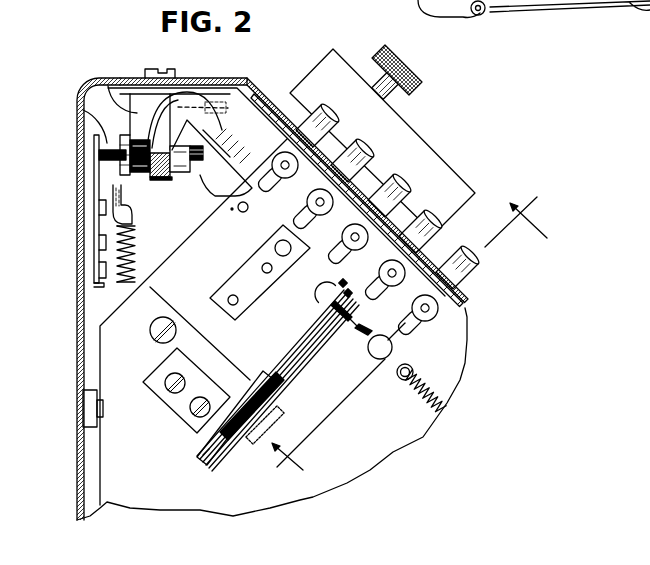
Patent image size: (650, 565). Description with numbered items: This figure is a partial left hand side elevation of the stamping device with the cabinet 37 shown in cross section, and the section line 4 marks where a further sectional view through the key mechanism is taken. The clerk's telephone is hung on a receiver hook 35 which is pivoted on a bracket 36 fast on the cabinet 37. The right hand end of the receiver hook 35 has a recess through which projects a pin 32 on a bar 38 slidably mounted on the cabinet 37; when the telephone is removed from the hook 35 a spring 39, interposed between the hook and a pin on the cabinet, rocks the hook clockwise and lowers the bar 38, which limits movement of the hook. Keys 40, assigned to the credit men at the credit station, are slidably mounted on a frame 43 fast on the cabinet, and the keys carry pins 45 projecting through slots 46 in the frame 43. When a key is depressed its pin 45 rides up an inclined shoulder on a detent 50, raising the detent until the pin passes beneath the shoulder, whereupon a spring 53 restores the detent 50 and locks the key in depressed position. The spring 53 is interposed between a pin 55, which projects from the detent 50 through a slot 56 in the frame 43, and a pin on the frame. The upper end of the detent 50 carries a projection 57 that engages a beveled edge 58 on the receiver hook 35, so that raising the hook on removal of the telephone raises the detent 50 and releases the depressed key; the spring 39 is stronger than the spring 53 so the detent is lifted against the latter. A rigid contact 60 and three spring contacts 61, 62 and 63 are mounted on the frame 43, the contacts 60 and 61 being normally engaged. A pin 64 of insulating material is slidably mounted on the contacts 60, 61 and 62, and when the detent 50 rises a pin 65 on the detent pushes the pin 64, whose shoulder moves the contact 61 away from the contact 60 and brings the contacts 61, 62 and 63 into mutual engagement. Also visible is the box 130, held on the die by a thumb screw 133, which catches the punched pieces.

The section line 4- 4 is at (407, 335).
The pin 32 is at (80, 110).
The receiver hook 35 is at (160, 179).
The bracket 36 is at (108, 86).
The cabinet 37 is at (240, 78).
The bar 38 is at (97, 182).
The spring 39 is at (135, 260).
The keys 40 is at (430, 210).
The frame 43 is at (200, 230).
The pins 45 is at (413, 305).
The slots 46 is at (366, 284).
The detent 50 is at (238, 163).
The spring 53 is at (432, 398).
The pin 55 is at (398, 377).
The slot 56 is at (372, 340).
The projection 57 is at (137, 114).
The beveled edge 58 is at (170, 117).
The rigid contact 60 is at (307, 370).
The spring contact 61 is at (215, 470).
The spring contact 62 is at (210, 462).
The spring contact 63 is at (203, 455).
The pin of insulating material 64 is at (367, 326).
The pin 65 is at (392, 347).
The box 130 is at (443, 172).
The thumb screw 133 is at (415, 82).